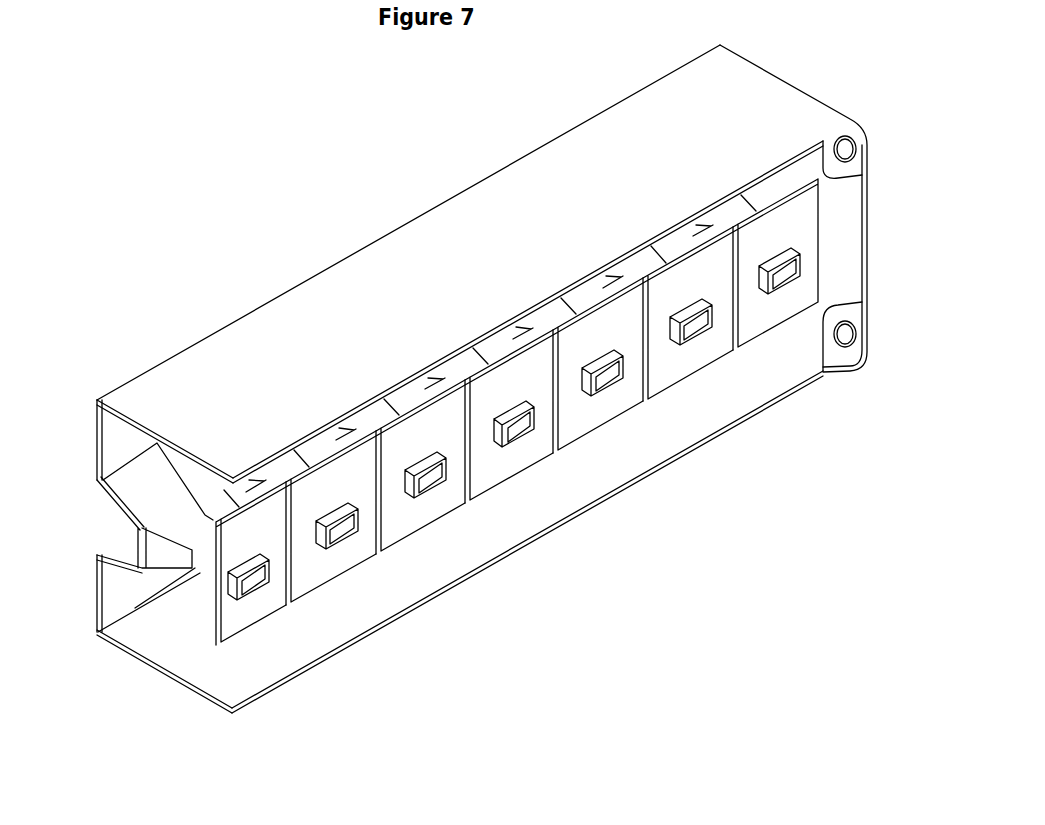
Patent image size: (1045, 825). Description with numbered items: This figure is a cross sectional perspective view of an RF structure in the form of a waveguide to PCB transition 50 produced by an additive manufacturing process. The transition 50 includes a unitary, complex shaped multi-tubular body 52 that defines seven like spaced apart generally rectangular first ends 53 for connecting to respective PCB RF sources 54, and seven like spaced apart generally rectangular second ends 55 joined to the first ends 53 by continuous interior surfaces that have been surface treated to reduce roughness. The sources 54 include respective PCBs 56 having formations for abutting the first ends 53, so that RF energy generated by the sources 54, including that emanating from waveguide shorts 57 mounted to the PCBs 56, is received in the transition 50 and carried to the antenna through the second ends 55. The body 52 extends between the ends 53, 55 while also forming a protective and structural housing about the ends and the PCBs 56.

The waveguide to PCB transition 50 is at (290, 162).
The unitary body 52 is at (445, 220).
The first end 53 is at (205, 567).
The PCB RF source 54 is at (287, 645).
The second end 55 is at (140, 537).
The PCB 56 is at (227, 622).
The waveguide short 57 is at (243, 583).